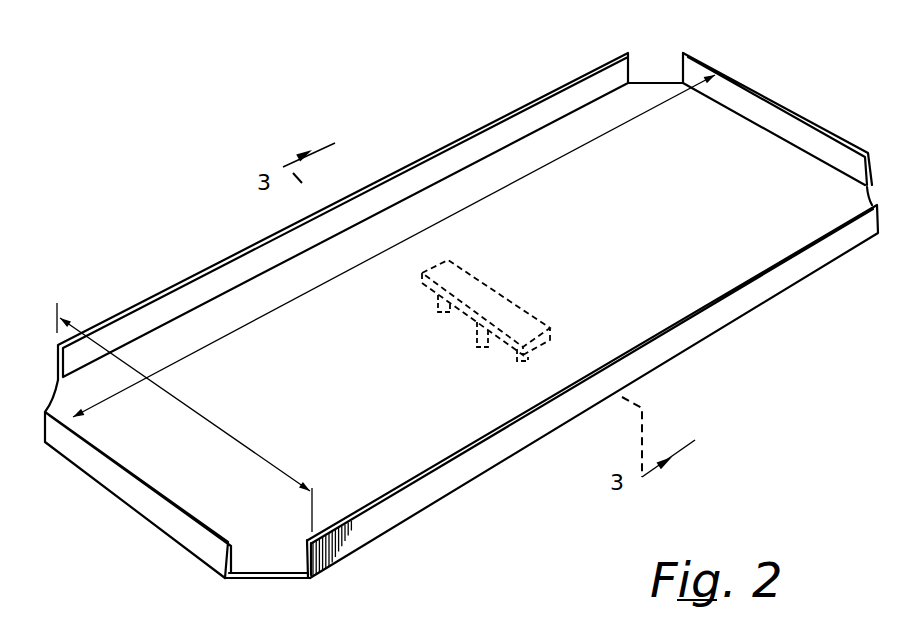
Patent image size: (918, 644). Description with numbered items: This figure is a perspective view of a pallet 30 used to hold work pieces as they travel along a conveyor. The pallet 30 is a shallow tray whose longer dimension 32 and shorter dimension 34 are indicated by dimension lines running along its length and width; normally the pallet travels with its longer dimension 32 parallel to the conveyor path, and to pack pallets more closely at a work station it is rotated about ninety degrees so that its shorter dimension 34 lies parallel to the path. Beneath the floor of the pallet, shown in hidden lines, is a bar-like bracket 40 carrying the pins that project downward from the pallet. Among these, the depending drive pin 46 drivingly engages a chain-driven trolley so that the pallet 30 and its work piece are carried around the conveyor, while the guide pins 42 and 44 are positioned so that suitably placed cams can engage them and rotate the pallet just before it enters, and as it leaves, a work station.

The pallet 30 is at (752, 327).
The longer dimension 32 is at (600, 147).
The shorter dimension 34 is at (247, 450).
The bracket 40 is at (522, 308).
The guide pin 42 is at (523, 362).
The guide pin 44 is at (440, 306).
The drive pin 46 is at (478, 343).